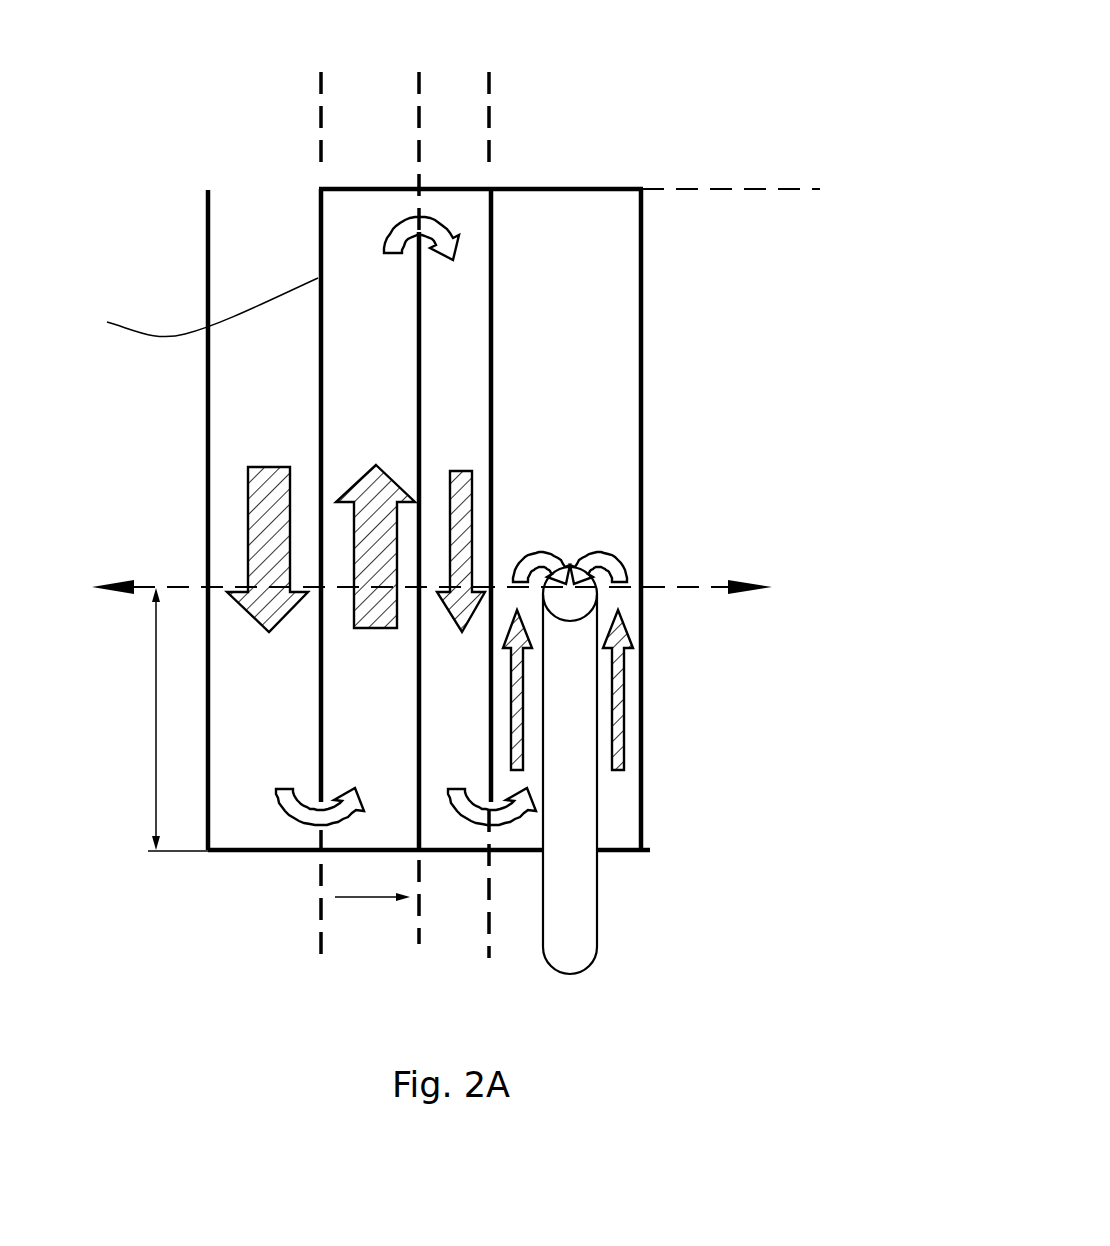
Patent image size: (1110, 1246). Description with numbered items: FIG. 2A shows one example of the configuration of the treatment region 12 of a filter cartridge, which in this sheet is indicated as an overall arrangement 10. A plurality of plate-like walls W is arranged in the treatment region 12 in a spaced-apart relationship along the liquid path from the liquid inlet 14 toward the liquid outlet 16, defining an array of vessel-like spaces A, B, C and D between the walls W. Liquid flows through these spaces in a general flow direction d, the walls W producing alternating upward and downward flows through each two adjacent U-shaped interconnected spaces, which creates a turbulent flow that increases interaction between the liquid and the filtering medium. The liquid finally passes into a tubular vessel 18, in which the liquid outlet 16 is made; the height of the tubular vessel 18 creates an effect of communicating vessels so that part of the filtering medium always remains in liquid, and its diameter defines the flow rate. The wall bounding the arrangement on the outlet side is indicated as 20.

The mixing apparatus 10 is at (716, 83).
The treatment region 12 is at (170, 428).
The liquid inlet 14 is at (264, 226).
The liquid outlet 16 is at (555, 898).
The tubular vessel 18 is at (563, 817).
The vessel wall 20 is at (643, 385).